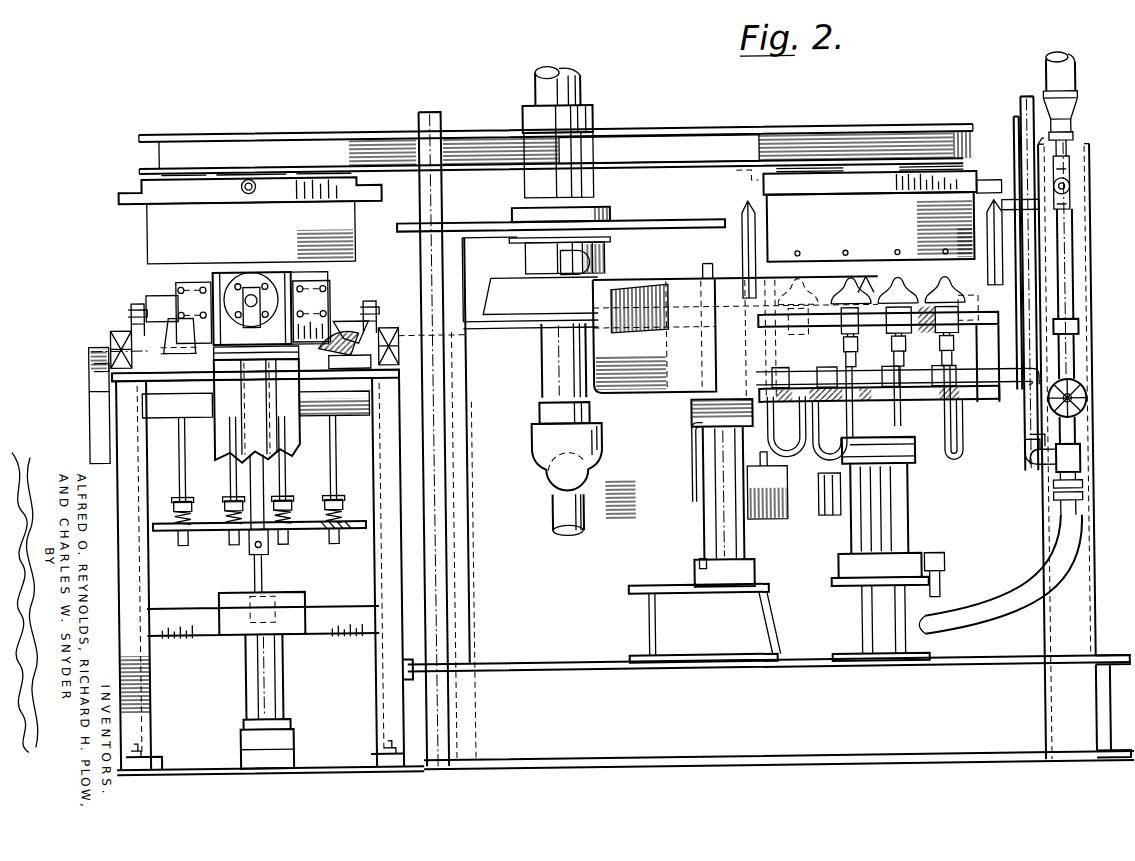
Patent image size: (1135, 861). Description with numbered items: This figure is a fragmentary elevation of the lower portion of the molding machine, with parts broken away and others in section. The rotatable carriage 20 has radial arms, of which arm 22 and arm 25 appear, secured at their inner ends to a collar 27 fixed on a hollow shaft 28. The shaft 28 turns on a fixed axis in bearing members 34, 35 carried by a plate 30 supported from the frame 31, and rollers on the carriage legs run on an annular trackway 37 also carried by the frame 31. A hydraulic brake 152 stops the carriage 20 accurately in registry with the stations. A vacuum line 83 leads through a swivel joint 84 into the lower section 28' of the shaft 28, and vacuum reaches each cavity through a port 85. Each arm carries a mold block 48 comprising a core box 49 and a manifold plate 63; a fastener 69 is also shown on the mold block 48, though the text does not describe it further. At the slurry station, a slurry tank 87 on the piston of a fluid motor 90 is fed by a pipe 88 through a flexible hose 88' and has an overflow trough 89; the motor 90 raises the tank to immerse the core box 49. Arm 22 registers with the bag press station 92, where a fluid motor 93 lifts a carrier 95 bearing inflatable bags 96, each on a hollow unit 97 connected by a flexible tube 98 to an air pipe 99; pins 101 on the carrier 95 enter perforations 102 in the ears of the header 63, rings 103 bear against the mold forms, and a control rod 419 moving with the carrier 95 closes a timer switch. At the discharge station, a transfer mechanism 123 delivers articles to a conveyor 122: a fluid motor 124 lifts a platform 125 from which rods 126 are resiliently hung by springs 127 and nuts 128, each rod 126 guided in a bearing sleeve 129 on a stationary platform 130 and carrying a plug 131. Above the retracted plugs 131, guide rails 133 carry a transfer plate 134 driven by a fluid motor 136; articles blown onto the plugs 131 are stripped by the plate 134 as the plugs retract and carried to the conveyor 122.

The rotatable carriage 20 is at (912, 112).
The arm 22 is at (835, 136).
The arm 25 is at (387, 128).
The collar 27 is at (598, 113).
The shaft 28 is at (577, 132).
The lower section of the shaft 28' is at (547, 373).
The plate 30 is at (656, 231).
The frame 31 is at (1090, 335).
The bearing member 34 is at (609, 212).
The bearing member 35 is at (608, 241).
The annular trackway 37 is at (467, 220).
The mold block 48 is at (118, 182).
The core box 49 is at (783, 216).
The manifold plate 63 is at (973, 182).
The bolt 69 is at (256, 176).
The line 83 is at (588, 520).
The swivel joint 84 is at (601, 447).
The port 85 is at (847, 259).
The slurry tank 87 is at (658, 389).
The pipe 88 is at (1076, 283).
The flexible hose 88' is at (1001, 574).
The overflow trough 89 is at (640, 322).
The fluid motor 90 is at (717, 528).
The bag press station 92 is at (970, 298).
The fluid motor 93 is at (898, 517).
The carrier 95 is at (990, 322).
The inflatable bag 96 is at (946, 290).
The hollow unit 97 is at (942, 331).
The flexible tube 98 is at (955, 438).
The air pipe 99 is at (990, 378).
The pin 101 is at (747, 242).
The perforation 102 is at (993, 185).
The ring 103 is at (877, 302).
The conveyor 122 is at (147, 332).
The transfer mechanism 123 is at (98, 271).
The fluid motor 124 is at (277, 673).
The platform 125 is at (167, 527).
The rod 126 is at (330, 471).
The spring 127 is at (328, 513).
The nut 128 is at (227, 500).
The bearing sleeve 129 is at (335, 355).
The stationary platform 130 is at (117, 371).
The plug 131 is at (173, 316).
The guide rail 133 is at (134, 305).
The transfer plate 134 is at (345, 288).
The fluid motor 136 is at (318, 272).
The hydraulic brake 152 is at (498, 281).
The control rod 419 is at (1018, 122).